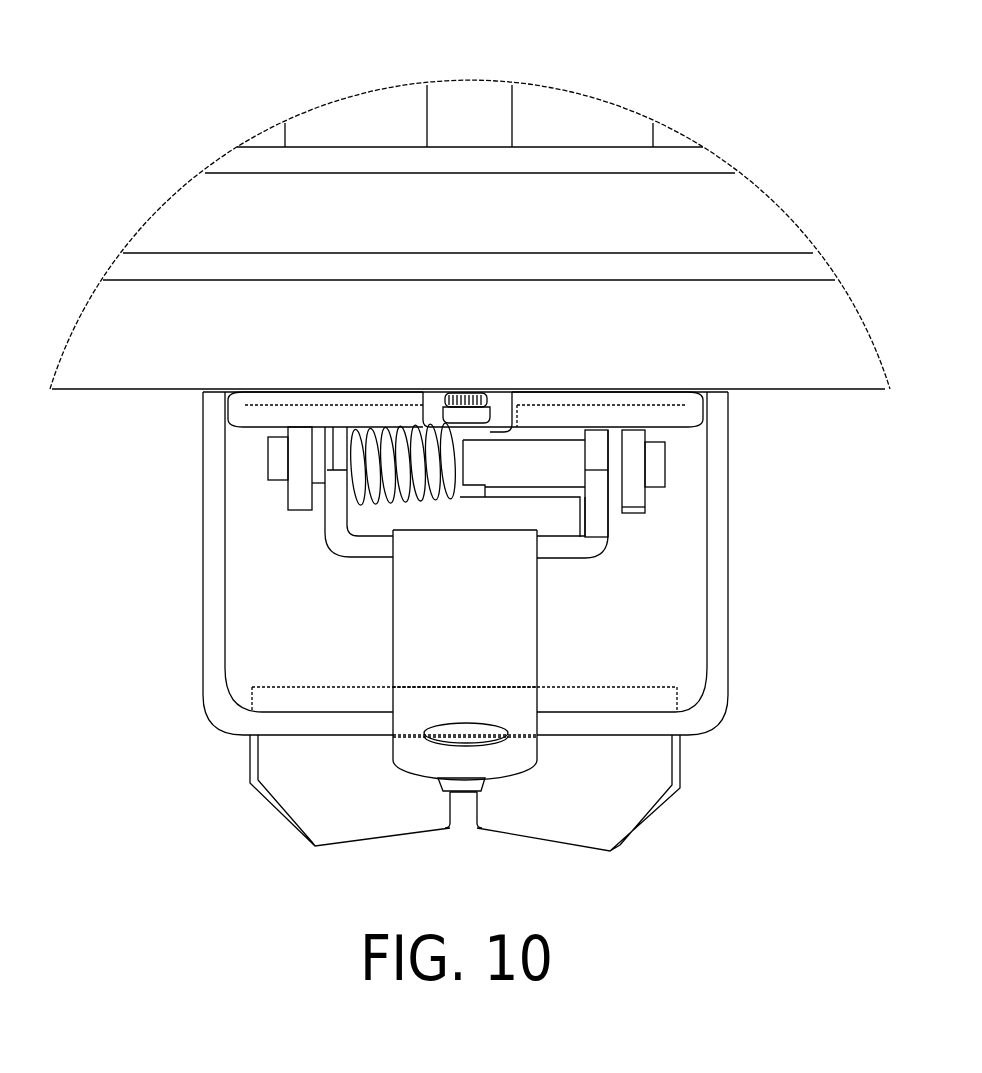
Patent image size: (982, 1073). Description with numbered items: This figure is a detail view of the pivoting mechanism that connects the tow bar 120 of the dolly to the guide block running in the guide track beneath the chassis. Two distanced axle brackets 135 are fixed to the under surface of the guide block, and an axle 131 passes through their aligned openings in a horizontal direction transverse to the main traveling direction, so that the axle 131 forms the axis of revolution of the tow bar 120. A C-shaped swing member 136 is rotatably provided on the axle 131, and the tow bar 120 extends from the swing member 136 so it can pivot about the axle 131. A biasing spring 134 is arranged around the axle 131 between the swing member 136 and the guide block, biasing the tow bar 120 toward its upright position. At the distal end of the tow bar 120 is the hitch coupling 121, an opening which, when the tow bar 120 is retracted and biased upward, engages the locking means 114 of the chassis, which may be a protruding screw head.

The locking means 114 is at (467, 393).
The biasing spring 134 is at (397, 468).
The axle 131 is at (548, 460).
The axle brackets 135 is at (297, 495).
The swing member 136 is at (593, 540).
The tow bar 120 is at (512, 665).
The hitch coupling 121 is at (467, 737).